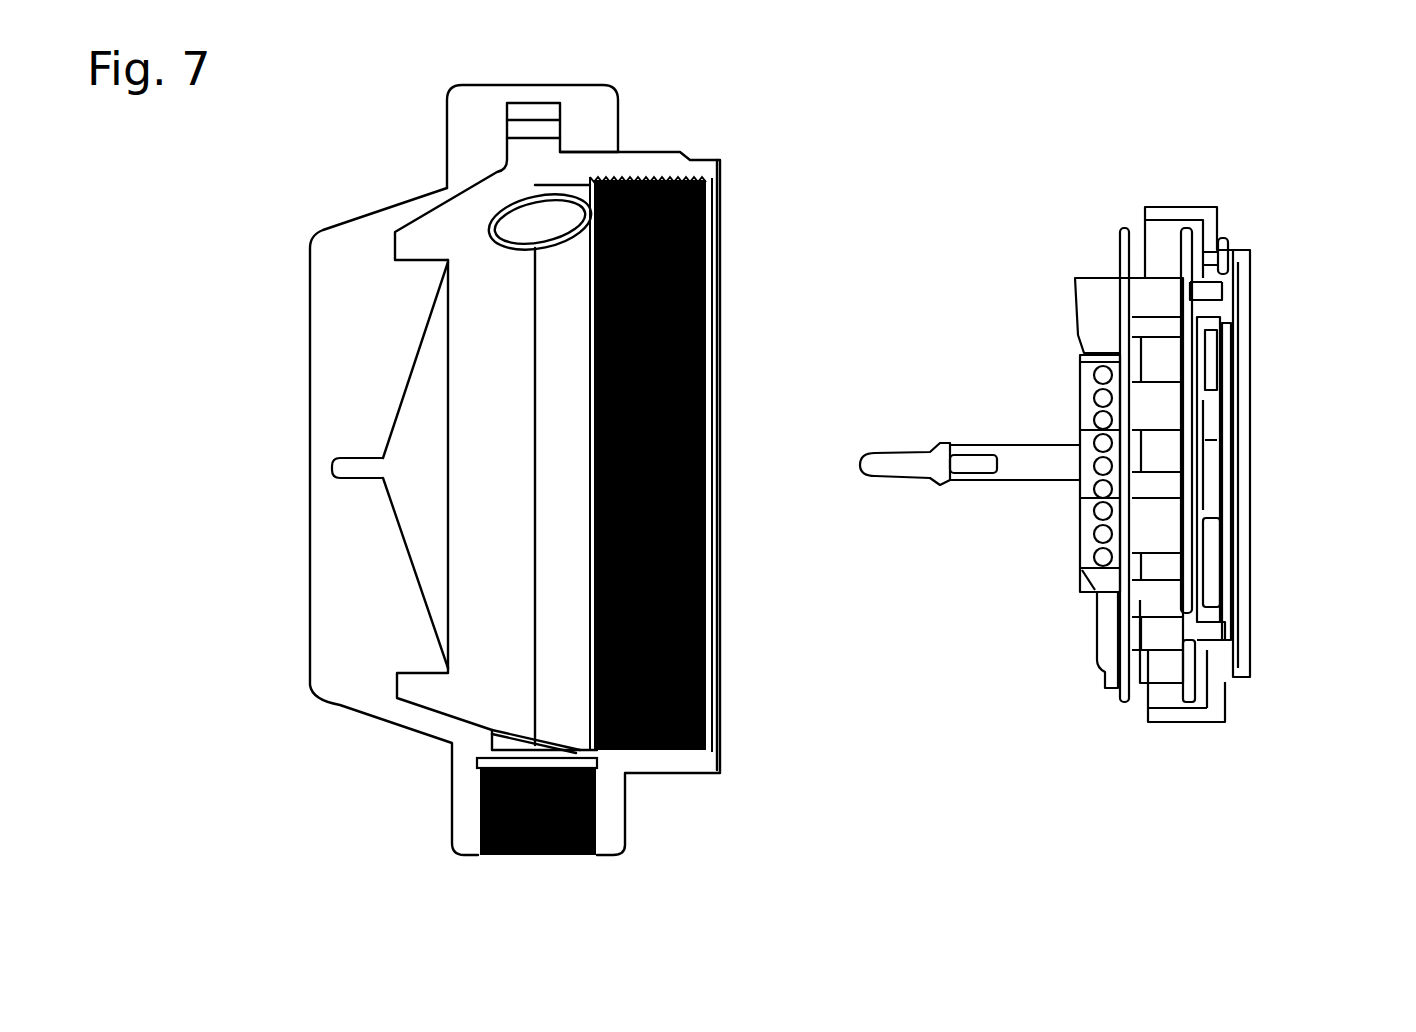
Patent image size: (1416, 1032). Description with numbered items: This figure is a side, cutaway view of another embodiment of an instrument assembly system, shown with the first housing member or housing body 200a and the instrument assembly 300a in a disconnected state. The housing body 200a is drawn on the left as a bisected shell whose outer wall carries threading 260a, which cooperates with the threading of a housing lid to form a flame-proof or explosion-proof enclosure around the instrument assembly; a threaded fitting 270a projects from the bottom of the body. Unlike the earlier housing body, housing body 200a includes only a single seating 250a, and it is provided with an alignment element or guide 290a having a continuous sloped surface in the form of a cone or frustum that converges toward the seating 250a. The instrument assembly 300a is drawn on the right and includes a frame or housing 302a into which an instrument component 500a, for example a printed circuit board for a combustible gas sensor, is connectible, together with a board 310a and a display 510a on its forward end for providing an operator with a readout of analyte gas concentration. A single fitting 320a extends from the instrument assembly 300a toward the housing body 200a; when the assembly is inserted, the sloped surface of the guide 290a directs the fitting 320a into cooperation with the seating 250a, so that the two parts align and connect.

The housing body 200a is at (340, 723).
The seating 250a is at (333, 447).
The threading 260a is at (702, 642).
The nut 270a is at (587, 860).
The alignment element or guide 290a is at (410, 385).
The instrument assembly 300a is at (1238, 185).
The frame or housing 302a is at (1172, 195).
The circuit board 310a is at (995, 383).
The fitting 320a is at (895, 430).
The instrument component 500a is at (1143, 540).
The display 510a is at (1250, 518).